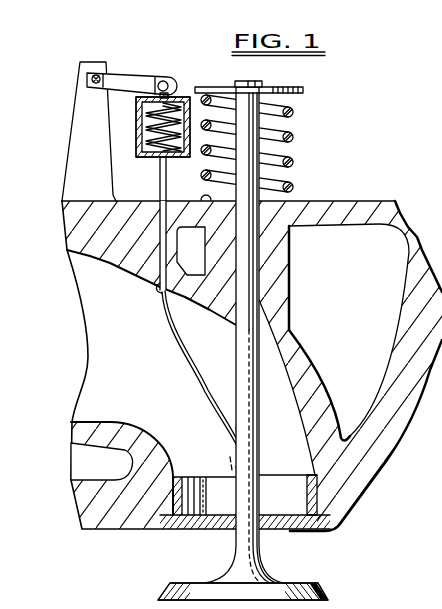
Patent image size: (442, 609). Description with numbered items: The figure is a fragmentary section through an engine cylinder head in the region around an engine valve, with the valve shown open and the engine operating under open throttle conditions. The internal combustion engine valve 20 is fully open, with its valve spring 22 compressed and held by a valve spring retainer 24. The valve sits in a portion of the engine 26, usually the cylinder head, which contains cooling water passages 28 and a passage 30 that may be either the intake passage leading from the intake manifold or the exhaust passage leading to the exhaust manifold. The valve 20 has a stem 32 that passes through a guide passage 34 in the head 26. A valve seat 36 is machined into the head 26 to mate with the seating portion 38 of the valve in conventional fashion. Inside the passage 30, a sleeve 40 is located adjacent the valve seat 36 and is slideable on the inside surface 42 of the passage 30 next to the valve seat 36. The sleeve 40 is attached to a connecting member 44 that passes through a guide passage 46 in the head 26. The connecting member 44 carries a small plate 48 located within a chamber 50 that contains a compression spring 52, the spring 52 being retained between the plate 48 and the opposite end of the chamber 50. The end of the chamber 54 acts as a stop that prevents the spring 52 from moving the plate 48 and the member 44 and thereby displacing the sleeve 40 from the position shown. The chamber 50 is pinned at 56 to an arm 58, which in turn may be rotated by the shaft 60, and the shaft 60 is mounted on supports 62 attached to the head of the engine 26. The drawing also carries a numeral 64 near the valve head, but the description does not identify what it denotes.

The engine valve 20 is at (334, 568).
The valve spring 22 is at (294, 137).
The valve spring retainer 24 is at (303, 91).
The engine portion 26 is at (388, 204).
The cooling water passages 28 is at (202, 260).
The passage 30 is at (151, 318).
The valve stem 32 is at (236, 557).
The guide passage 34 is at (284, 203).
The valve seat 36 is at (172, 530).
The seating portion 38 is at (320, 592).
The sleeve 40 is at (200, 478).
The inside surface 42 is at (305, 503).
The connecting member 44 is at (197, 369).
The guide passage 46 is at (157, 288).
The plate 48 is at (166, 182).
The chamber 50 is at (183, 98).
The compression spring 52 is at (143, 124).
The end of the chamber 54 is at (167, 158).
The pin 56 is at (165, 80).
The arm 58 is at (121, 76).
The shaft 60 is at (92, 79).
The supports 62 is at (78, 178).
The valve head margin 64 is at (186, 584).